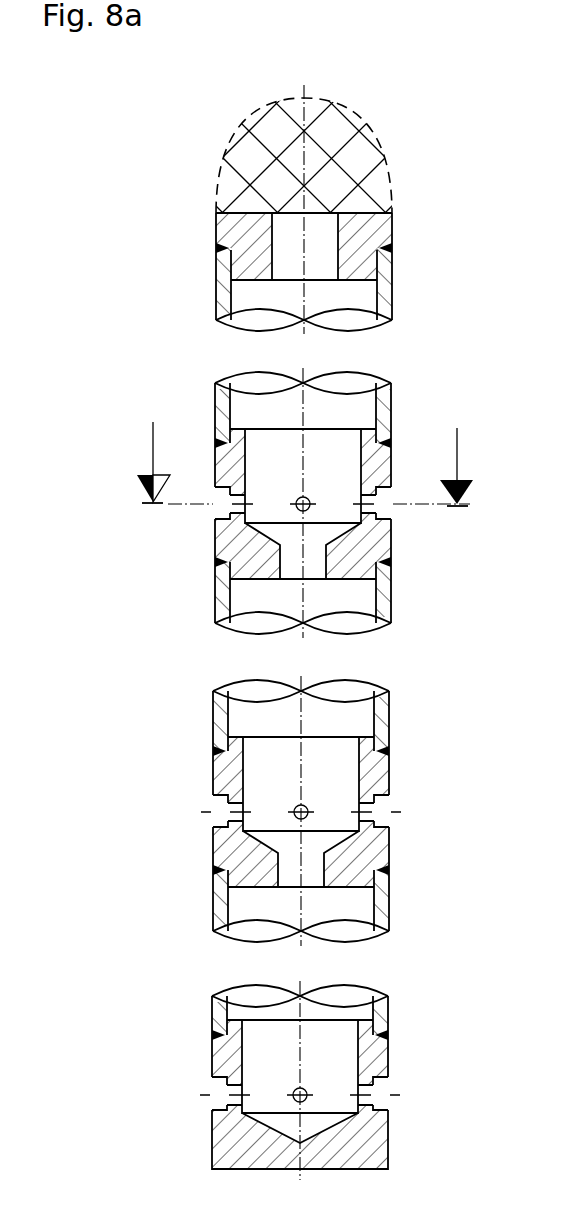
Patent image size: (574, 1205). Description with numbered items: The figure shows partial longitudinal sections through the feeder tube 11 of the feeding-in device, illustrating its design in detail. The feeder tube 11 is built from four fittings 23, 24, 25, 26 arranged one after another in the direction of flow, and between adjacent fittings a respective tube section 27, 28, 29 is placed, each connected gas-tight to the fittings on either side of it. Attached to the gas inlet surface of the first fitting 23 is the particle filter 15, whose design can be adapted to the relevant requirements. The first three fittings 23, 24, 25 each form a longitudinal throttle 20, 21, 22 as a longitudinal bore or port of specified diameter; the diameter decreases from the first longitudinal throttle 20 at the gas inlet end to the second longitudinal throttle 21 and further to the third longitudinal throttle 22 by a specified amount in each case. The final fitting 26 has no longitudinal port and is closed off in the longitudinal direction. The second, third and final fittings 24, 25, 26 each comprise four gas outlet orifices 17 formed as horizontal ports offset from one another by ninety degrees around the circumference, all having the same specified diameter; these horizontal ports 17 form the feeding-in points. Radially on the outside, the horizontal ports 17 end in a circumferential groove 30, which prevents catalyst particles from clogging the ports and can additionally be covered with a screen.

The feeder tube 11 is at (443, 137).
The particle filter 15 is at (351, 109).
The gas outlet orifices 17 is at (376, 512).
The first longitudinal throttle 20 is at (318, 237).
The second longitudinal throttle 21 is at (315, 559).
The third longitudinal throttle 22 is at (307, 875).
The first fitting 23 is at (377, 237).
The second fitting 24 is at (376, 463).
The third fitting 25 is at (378, 770).
The final fitting 26 is at (377, 1067).
The tube section 27 is at (383, 303).
The tube section 28 is at (383, 598).
The tube section 29 is at (383, 913).
The circumferential groove 30 is at (381, 496).